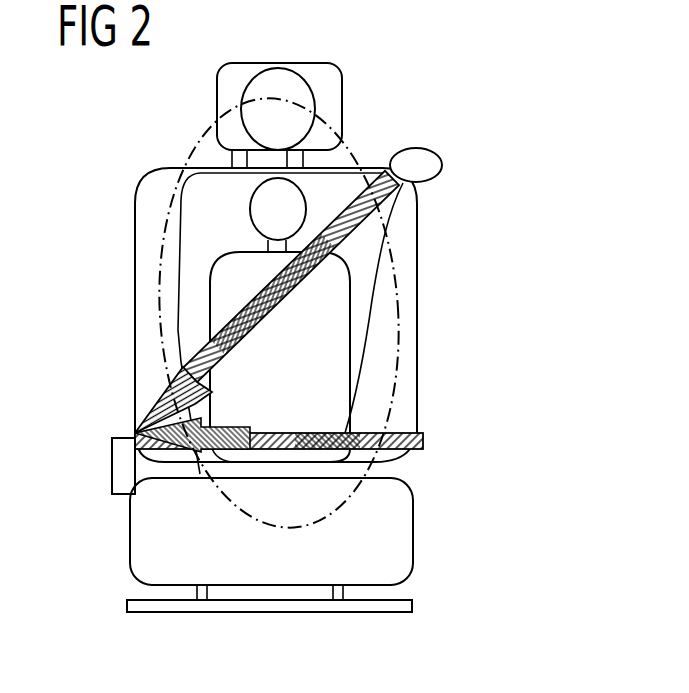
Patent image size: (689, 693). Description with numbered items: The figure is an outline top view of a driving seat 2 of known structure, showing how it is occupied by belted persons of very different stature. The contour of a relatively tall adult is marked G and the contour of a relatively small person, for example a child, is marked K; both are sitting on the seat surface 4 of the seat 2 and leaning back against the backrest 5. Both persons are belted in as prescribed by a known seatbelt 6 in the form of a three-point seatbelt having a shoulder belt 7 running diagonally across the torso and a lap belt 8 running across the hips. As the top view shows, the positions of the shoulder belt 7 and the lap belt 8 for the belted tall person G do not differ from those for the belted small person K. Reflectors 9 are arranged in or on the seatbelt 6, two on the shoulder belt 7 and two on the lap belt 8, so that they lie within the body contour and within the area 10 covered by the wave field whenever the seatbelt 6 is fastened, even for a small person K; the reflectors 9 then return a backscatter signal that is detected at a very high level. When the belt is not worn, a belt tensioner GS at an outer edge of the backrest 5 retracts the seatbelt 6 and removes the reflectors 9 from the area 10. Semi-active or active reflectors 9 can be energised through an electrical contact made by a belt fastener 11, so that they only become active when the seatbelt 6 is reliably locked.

The seat 2 is at (478, 495).
The seat surface 4 is at (402, 537).
The backrest 5 is at (403, 393).
The seatbelt 6 is at (480, 156).
The shoulder belt 7 is at (376, 168).
The lap belt 8 is at (424, 440).
The reflector 9 is at (288, 292).
The area covered by the wave field 10 is at (215, 140).
The belt fastener 11 is at (112, 468).
The tall person G is at (388, 238).
The belt tensioner GS is at (416, 148).
The small person K is at (350, 328).